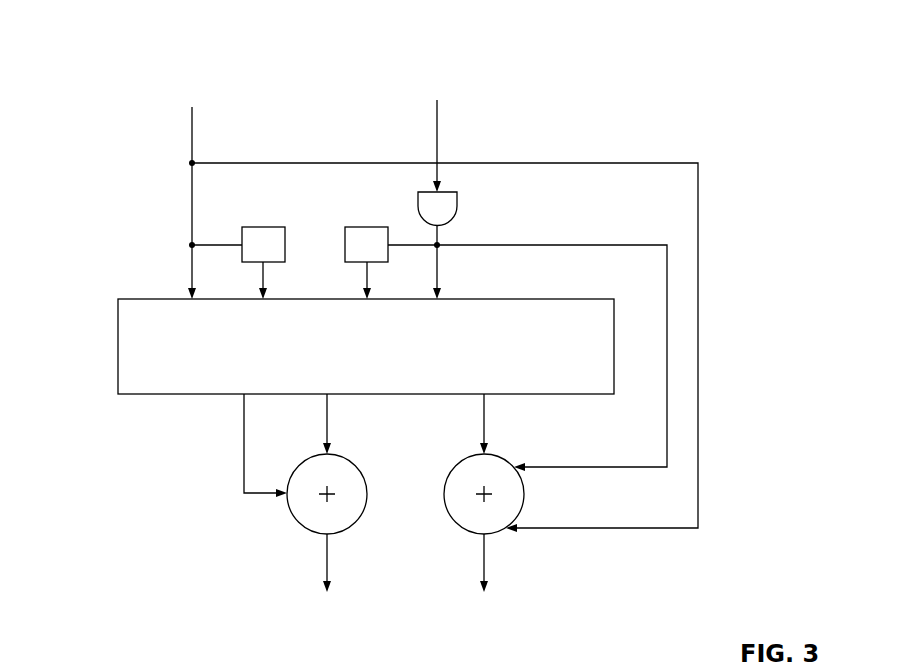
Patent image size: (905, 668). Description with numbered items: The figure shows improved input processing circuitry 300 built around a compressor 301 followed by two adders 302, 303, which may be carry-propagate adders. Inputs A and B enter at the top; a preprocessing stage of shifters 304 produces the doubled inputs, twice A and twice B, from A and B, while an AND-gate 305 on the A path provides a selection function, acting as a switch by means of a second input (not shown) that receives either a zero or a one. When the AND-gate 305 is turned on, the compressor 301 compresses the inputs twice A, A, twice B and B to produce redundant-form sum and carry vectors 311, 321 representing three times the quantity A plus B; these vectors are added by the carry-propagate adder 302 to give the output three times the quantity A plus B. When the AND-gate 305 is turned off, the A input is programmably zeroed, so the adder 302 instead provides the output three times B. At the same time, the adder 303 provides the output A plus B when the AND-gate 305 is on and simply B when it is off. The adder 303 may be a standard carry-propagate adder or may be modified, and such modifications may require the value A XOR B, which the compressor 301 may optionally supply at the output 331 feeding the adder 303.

The input processing circuitry 300 is at (117, 97).
The compressor 301 is at (136, 299).
The adder 302 is at (356, 468).
The adder 303 is at (455, 521).
The shifters 304 is at (355, 227).
The AND-gate 305 is at (457, 210).
The sum vector 311 is at (327, 405).
The carry vector 321 is at (244, 472).
The A XOR B output 331 is at (484, 427).